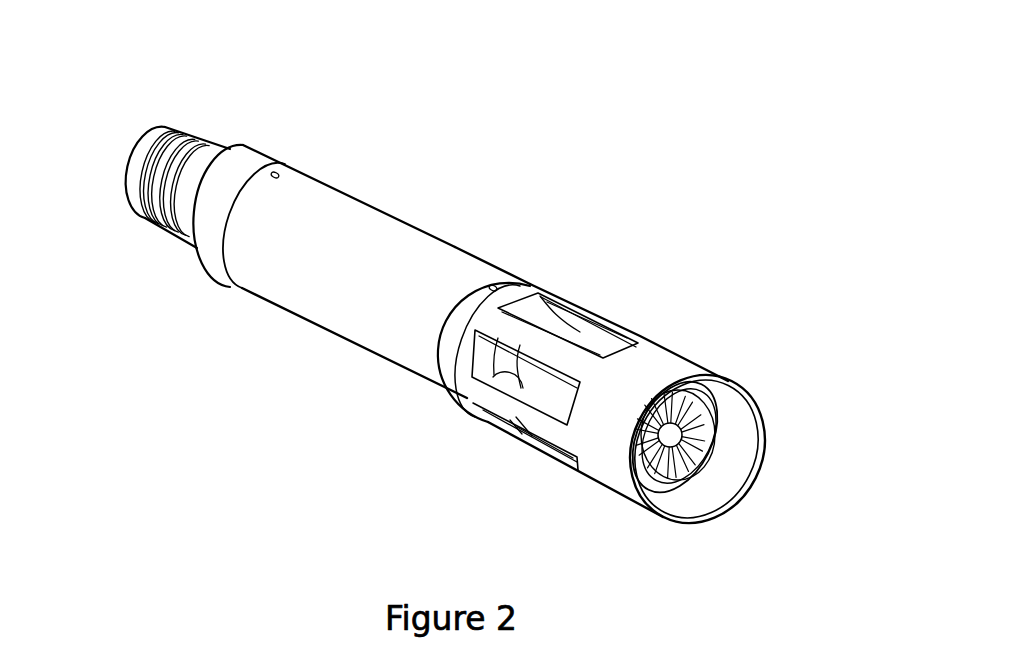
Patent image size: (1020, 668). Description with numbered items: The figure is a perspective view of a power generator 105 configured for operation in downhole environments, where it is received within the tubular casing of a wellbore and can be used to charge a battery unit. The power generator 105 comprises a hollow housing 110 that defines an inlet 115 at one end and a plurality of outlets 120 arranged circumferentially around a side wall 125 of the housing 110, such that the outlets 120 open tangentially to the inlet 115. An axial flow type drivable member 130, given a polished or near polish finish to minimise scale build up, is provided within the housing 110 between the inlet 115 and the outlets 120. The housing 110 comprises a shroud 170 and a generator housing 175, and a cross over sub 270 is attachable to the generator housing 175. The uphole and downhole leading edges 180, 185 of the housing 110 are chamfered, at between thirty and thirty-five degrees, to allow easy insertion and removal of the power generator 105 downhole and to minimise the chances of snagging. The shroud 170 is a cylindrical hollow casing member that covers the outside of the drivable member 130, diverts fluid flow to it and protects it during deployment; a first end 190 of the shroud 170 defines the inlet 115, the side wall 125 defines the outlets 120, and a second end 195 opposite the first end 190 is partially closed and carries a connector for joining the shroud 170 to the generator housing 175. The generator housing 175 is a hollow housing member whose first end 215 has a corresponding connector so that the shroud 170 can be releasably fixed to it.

The power generator 105 is at (208, 352).
The housing 110 is at (412, 224).
The inlet 115 is at (727, 447).
The outlets 120 is at (545, 388).
The side wall 125 is at (646, 367).
The drivable member 130 is at (692, 467).
The shroud 170 is at (617, 463).
The generator housing 175 is at (345, 314).
The uphole leading edge 180 is at (725, 375).
The downhole leading edge 185 is at (264, 150).
The first end of the shroud 190 is at (740, 480).
The second end of the shroud 195 is at (508, 295).
The first end of the generator housing 215 is at (453, 388).
The cross over sub 270 is at (141, 214).